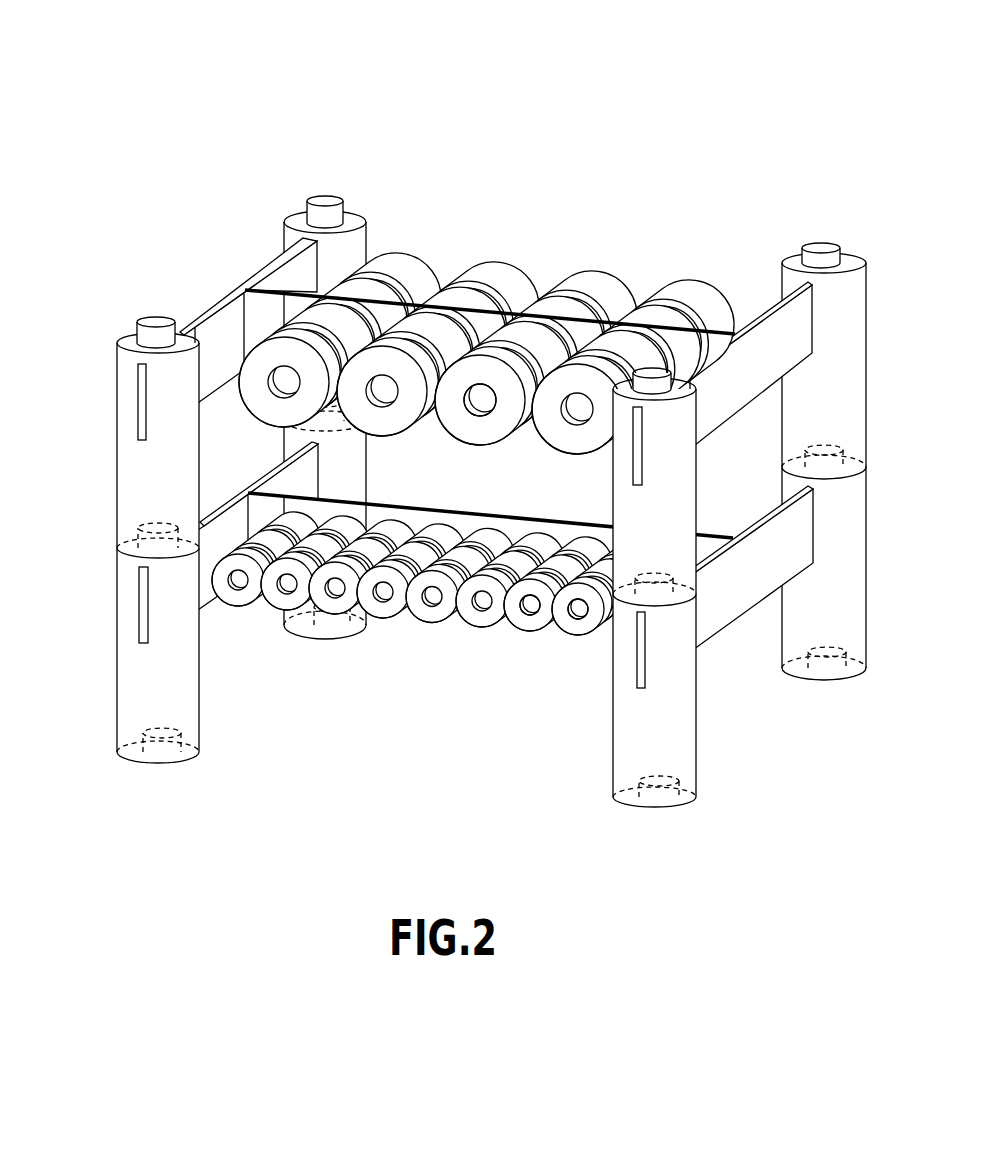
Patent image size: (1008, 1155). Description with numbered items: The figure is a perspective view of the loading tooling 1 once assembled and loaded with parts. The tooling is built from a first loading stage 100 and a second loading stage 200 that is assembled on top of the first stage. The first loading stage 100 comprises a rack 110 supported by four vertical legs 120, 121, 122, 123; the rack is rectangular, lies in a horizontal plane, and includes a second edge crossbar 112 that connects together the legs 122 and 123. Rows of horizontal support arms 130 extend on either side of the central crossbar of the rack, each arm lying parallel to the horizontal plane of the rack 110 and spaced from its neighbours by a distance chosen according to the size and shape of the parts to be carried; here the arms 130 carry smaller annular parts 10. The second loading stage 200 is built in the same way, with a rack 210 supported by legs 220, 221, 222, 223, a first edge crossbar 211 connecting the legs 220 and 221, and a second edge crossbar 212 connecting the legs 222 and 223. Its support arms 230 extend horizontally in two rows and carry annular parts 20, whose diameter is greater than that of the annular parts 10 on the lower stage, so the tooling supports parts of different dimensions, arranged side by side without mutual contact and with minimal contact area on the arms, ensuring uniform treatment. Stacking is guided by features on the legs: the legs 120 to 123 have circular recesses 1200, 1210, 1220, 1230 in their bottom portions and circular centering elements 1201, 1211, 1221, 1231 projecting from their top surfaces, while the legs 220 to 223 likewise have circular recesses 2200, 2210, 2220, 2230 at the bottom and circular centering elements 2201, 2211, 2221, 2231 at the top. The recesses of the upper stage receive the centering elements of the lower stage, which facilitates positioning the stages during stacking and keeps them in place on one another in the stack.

The loading tooling 1 is at (464, 443).
The annular parts 10 is at (436, 557).
The annular parts 20 is at (486, 350).
The first loading stage 100 is at (497, 642).
The rack 110 is at (232, 493).
The second edge crossbar 112 is at (752, 596).
The leg 120 is at (135, 682).
The leg 121 is at (296, 559).
The leg 122 is at (853, 604).
The leg 123 is at (682, 729).
The support arms 130 is at (574, 612).
The second loading stage 200 is at (464, 379).
The rack 210 is at (232, 319).
The first edge crossbar 211 is at (190, 274).
The second edge crossbar 212 is at (742, 390).
The leg 220 is at (102, 442).
The leg 221 is at (291, 292).
The leg 222 is at (852, 340).
The leg 223 is at (658, 472).
The support arms 230 is at (477, 402).
The circular recess 1200 is at (155, 758).
The circular centering element 1201 is at (91, 558).
The circular recess 1210 is at (326, 638).
The circular centering element 1211 is at (264, 414).
The circular recess 1220 is at (826, 682).
The circular centering element 1221 is at (856, 431).
The circular recess 1230 is at (656, 806).
The circular centering element 1231 is at (612, 562).
The circular recess 2200 is at (148, 553).
The circular centering element 2201 is at (155, 326).
The circular recess 2210 is at (290, 413).
The circular centering element 2211 is at (325, 203).
The circular recess 2220 is at (822, 446).
The circular centering element 2221 is at (820, 246).
The circular recess 2230 is at (665, 573).
The circular centering element 2231 is at (673, 381).